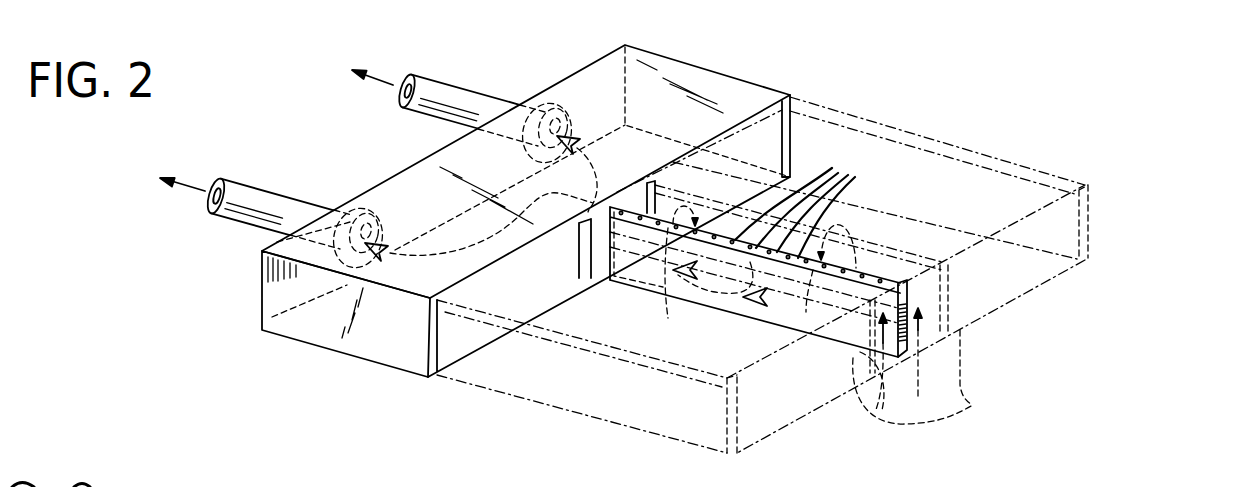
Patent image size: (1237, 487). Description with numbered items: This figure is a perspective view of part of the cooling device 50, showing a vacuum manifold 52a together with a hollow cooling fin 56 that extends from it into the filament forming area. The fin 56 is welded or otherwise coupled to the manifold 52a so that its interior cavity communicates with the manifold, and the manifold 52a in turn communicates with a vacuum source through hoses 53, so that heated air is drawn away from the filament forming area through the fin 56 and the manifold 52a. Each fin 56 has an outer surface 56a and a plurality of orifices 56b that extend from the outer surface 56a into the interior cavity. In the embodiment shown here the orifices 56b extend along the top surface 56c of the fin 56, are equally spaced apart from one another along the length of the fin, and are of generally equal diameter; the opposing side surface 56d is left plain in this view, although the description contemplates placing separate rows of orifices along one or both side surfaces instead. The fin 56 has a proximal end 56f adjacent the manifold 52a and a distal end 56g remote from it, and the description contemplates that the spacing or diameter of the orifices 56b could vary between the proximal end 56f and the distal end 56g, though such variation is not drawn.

The cooling device 50 is at (838, 88).
The first manifold 52a is at (695, 77).
The hoses 53 is at (272, 202).
The first cooling fin 56 is at (543, 385).
The outer surface 56a is at (1085, 235).
The orifices 56b is at (809, 198).
The top surface 56c is at (865, 267).
The side surface 56d is at (733, 437).
The proximal end 56f is at (614, 204).
The distal end 56g is at (907, 292).